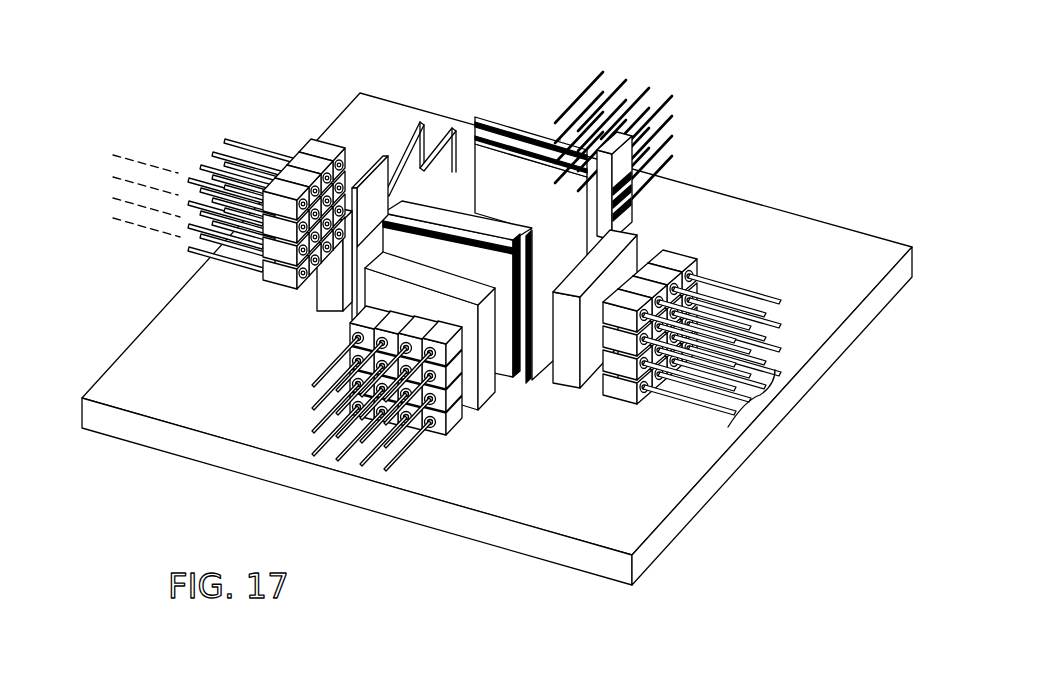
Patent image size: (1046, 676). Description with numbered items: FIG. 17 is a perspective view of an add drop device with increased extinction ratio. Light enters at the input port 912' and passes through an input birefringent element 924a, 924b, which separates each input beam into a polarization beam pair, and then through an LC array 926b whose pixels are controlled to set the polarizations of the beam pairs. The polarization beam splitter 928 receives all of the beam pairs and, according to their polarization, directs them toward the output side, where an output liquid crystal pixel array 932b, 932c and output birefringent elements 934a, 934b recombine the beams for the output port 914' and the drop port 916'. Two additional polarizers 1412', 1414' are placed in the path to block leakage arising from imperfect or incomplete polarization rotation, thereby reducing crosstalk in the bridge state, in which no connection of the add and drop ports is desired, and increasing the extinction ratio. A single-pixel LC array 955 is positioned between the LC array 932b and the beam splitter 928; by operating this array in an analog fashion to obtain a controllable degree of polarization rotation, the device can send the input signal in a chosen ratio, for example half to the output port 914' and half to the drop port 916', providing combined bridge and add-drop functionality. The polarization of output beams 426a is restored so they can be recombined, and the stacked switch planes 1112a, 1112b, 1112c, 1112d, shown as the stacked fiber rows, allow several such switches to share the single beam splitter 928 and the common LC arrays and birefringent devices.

The input port 912' is at (648, 105).
The output port 914' is at (728, 359).
The drop port 916' is at (351, 389).
The input birefringent element 924a is at (607, 200).
The input birefringent element 924b is at (583, 388).
The LC array 926b is at (612, 225).
The polarization beam splitter 928 is at (507, 150).
The output liquid crystal pixel array 932b is at (445, 132).
The mirror plate 932c is at (392, 165).
The output birefringent element 934a is at (503, 393).
The output birefringent element 934b is at (333, 297).
The single-pixel LC array 955 is at (488, 208).
The output beam 426a is at (548, 120).
The switch plane 1112a is at (177, 172).
The switch plane 1112b is at (157, 188).
The switch plane 1112c is at (160, 213).
The switch plane 1112d is at (173, 237).
The polarizer 1412' is at (531, 217).
The polarizer 1414' is at (297, 193).